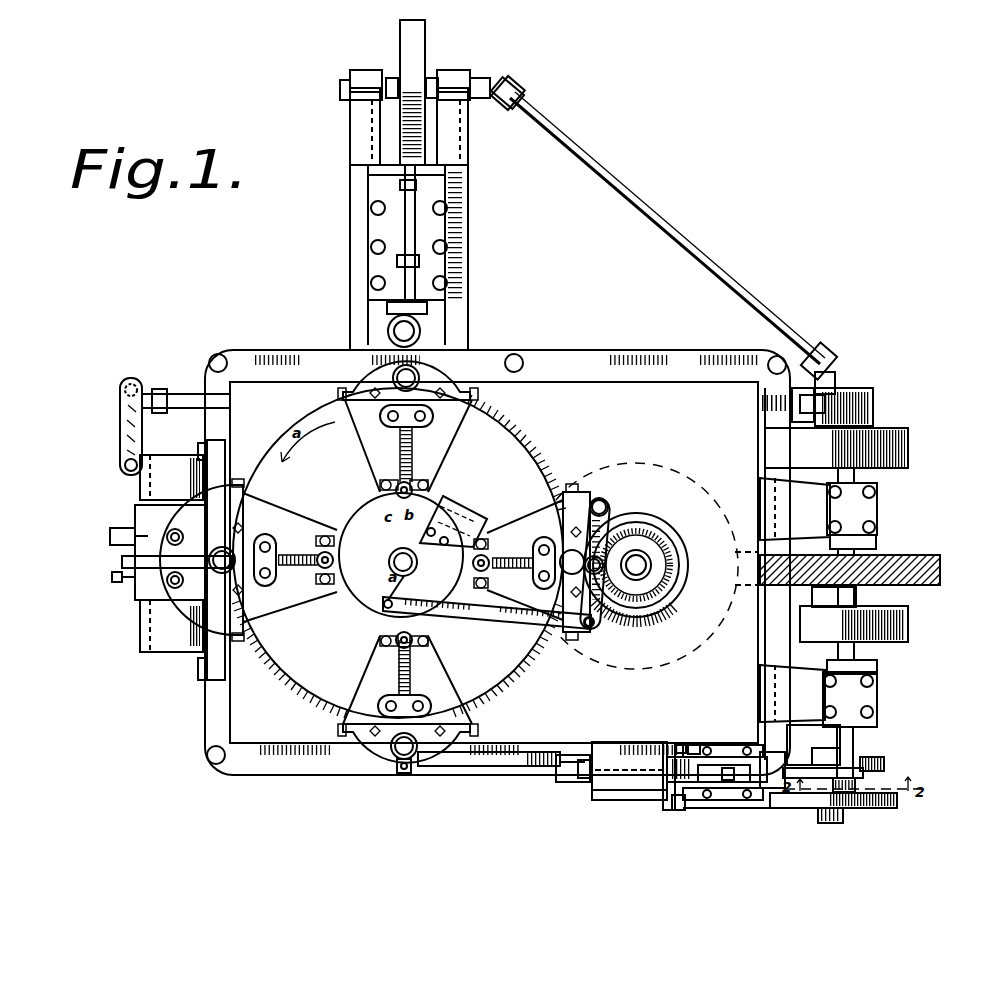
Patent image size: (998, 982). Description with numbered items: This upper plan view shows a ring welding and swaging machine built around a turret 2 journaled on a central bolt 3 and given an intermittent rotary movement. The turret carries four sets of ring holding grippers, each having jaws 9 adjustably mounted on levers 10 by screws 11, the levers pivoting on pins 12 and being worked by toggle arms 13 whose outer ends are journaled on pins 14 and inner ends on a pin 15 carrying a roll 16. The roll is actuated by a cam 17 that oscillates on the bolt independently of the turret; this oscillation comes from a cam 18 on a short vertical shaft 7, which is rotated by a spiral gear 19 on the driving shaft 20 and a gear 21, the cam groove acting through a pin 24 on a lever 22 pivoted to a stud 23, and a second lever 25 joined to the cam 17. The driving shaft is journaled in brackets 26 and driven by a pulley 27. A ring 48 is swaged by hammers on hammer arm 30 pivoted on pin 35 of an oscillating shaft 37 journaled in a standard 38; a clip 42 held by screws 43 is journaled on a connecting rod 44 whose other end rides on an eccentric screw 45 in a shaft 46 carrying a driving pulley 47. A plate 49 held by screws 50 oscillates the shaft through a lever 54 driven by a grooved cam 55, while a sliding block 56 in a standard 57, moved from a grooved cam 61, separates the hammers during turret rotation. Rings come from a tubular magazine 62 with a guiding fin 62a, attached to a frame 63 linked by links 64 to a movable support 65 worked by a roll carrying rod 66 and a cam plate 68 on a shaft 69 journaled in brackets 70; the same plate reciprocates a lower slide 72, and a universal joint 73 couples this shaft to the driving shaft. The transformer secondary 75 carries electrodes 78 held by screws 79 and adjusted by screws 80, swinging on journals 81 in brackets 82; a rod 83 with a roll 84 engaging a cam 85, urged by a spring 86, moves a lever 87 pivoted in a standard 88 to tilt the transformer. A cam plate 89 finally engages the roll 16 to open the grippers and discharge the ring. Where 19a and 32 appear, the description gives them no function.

The turret 2 is at (522, 446).
The central bolt 3 is at (403, 560).
The short vertical shaft 7 is at (648, 563).
The jaws 9 is at (350, 392).
The levers 10 is at (362, 430).
The screws 11 is at (338, 392).
The pins 12 is at (380, 414).
The toggle arms 13 is at (390, 478).
The pins 14 is at (428, 484).
The pin 15 is at (320, 552).
The roll 16 is at (406, 480).
The cam 17 is at (392, 600).
The cam 18 is at (652, 518).
The spiral gear 19 is at (938, 574).
The toothed ring 19a is at (660, 545).
The driving shaft 20 is at (812, 600).
The gear 21 is at (690, 650).
The lever 22 is at (605, 535).
The stud 23 is at (605, 500).
The pin 24 is at (640, 620).
The lever 25 is at (488, 613).
The brackets 26 is at (818, 602).
The pulley 27 is at (836, 448).
The hammer arm 30 is at (478, 768).
The screw 32 is at (404, 774).
The pin 35 is at (562, 782).
The oscillating shaft 37 is at (585, 760).
The standard 38 is at (622, 742).
The clip 42 is at (770, 752).
The screws 43 is at (696, 744).
The connecting rod 44 is at (800, 760).
The screw 45 is at (856, 786).
The shaft 46 is at (856, 597).
The driving pulley 47 is at (854, 624).
The ring 48 is at (392, 372).
The plate 49 is at (670, 745).
The screws 50 is at (684, 745).
The lever 54 is at (818, 816).
The grooved cam 55 is at (897, 804).
The sliding block 56 is at (728, 765).
The standard 57 is at (755, 745).
The grooved cam 61 is at (884, 764).
The ring carrying magazine 62 is at (412, 330).
The fin 62a is at (394, 336).
The frame 63 is at (387, 308).
The links 64 is at (400, 272).
The movable support 65 is at (405, 230).
The roll carrying rod 66 is at (466, 160).
The cam plate 68 is at (412, 92).
The shaft 69 is at (340, 88).
The brackets 70 is at (366, 78).
The lower slide 72 is at (352, 160).
The universal joint 73 is at (672, 236).
The secondary 75 is at (150, 585).
The electrodes 78 is at (122, 560).
The screws 79 is at (183, 535).
The screws 80 is at (110, 534).
The journals 81 is at (168, 652).
The brackets 82 is at (140, 488).
The rod 83 is at (188, 394).
The roll 84 is at (800, 422).
The cam 85 is at (860, 405).
The spring 86 is at (760, 400).
The lever 87 is at (120, 418).
The standard 88 is at (165, 455).
The cam plate 89 is at (470, 502).